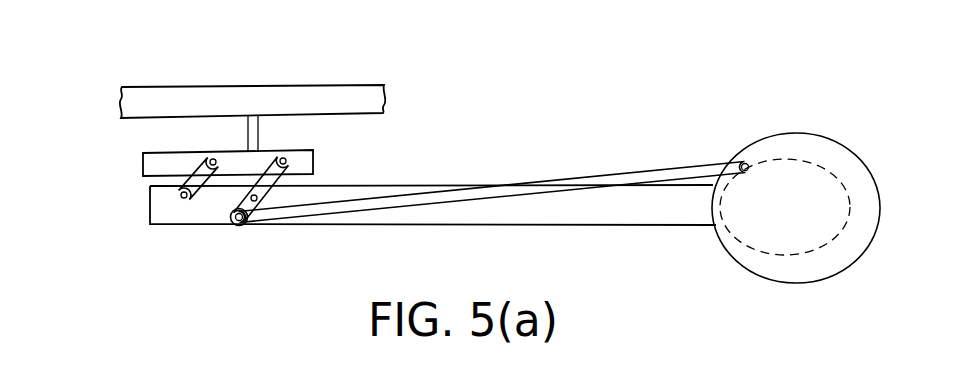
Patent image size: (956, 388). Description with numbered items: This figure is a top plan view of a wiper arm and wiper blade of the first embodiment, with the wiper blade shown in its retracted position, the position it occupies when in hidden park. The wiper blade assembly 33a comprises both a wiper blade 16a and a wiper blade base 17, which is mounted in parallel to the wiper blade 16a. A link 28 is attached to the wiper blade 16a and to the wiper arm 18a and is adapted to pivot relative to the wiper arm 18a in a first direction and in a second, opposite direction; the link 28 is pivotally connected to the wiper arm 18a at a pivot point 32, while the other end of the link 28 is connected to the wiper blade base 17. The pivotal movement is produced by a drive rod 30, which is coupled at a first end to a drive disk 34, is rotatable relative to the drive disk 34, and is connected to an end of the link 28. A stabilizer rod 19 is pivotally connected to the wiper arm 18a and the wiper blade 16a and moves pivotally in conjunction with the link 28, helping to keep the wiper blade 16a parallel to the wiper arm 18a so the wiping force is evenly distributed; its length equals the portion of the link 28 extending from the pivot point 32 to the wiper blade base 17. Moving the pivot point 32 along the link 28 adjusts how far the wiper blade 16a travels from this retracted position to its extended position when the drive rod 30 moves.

The wiper blade 16a is at (219, 105).
The wiper blade base 17 is at (305, 162).
The wiper arm 18a is at (678, 210).
The stabilizer rod 19 is at (178, 195).
The link 28 is at (245, 194).
The drive rod 30 is at (662, 174).
The pivot point 32 is at (240, 195).
The wiper blade assembly 33a is at (110, 142).
The drive disk 34 is at (815, 147).